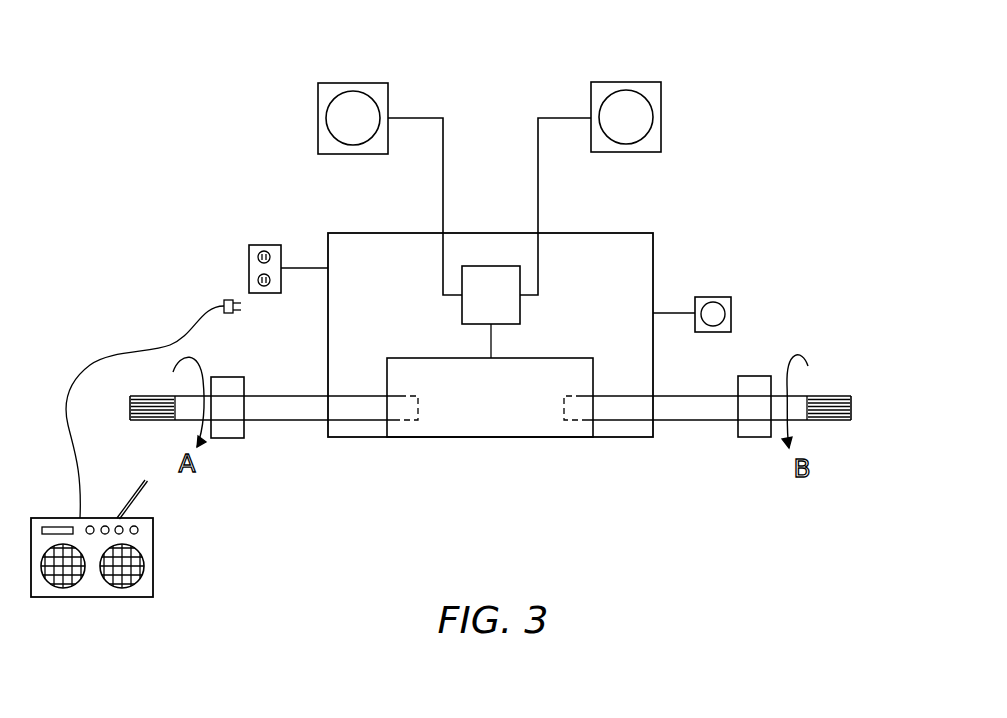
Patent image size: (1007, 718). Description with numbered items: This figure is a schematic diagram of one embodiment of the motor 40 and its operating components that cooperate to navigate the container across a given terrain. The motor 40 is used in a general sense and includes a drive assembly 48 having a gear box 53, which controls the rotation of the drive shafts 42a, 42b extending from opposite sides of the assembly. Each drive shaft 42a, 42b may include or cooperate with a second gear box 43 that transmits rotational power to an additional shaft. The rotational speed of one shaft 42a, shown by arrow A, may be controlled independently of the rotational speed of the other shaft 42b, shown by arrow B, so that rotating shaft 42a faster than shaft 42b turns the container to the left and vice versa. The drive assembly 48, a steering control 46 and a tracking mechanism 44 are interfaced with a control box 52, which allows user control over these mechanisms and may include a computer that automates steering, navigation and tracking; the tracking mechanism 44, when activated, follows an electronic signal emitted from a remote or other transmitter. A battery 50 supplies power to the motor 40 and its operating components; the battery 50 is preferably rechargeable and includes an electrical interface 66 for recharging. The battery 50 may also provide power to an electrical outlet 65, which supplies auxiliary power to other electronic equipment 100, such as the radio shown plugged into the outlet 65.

The motor 40 is at (218, 172).
The drive shaft 42a is at (147, 421).
The drive shaft 42b is at (832, 420).
The second gear box 43 is at (228, 438).
The tracking mechanism 44 is at (642, 82).
The steering control 46 is at (337, 83).
The drive assembly 48 is at (490, 437).
The battery 50 is at (647, 262).
The control box 52 is at (485, 275).
The gear box 53 is at (508, 416).
The electrical outlet 65 is at (249, 252).
The electrical interface 66 is at (731, 312).
The electronic equipment 100 is at (148, 555).